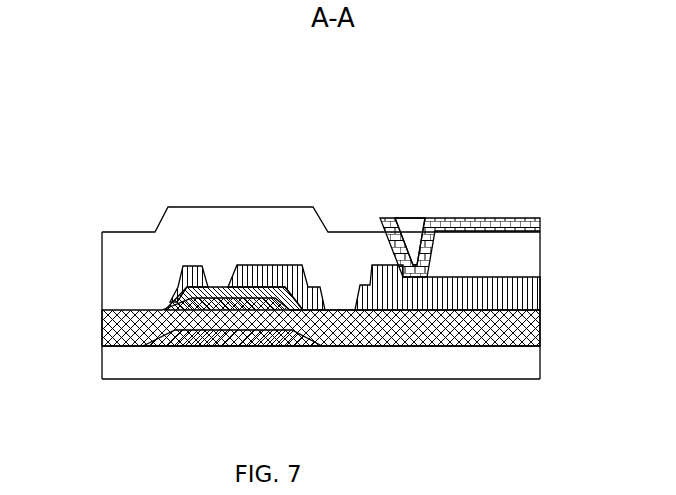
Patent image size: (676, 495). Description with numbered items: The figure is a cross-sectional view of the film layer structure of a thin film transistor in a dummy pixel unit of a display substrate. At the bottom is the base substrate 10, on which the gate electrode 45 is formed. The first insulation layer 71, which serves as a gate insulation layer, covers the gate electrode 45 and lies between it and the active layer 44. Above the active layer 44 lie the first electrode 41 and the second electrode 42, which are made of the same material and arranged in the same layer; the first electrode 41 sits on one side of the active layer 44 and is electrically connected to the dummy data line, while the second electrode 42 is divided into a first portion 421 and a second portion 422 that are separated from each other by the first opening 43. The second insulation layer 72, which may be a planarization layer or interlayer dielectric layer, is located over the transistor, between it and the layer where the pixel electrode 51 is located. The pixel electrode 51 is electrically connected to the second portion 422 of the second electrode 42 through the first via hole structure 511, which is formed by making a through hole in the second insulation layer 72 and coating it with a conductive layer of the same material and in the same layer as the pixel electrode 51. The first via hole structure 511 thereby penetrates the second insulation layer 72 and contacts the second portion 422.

The base substrate 10 is at (335, 365).
The first electrode 41 is at (185, 277).
The second electrode 42 is at (384, 208).
The first portion 421 is at (295, 265).
The second portion 422 is at (443, 241).
The first opening 43 is at (342, 297).
The active layer 44 is at (217, 290).
The gate electrode 45 is at (190, 337).
The pixel electrode 51 is at (498, 218).
The first via hole structure 511 is at (418, 260).
The first insulation layer 71 is at (115, 325).
The second insulation layer 72 is at (138, 260).